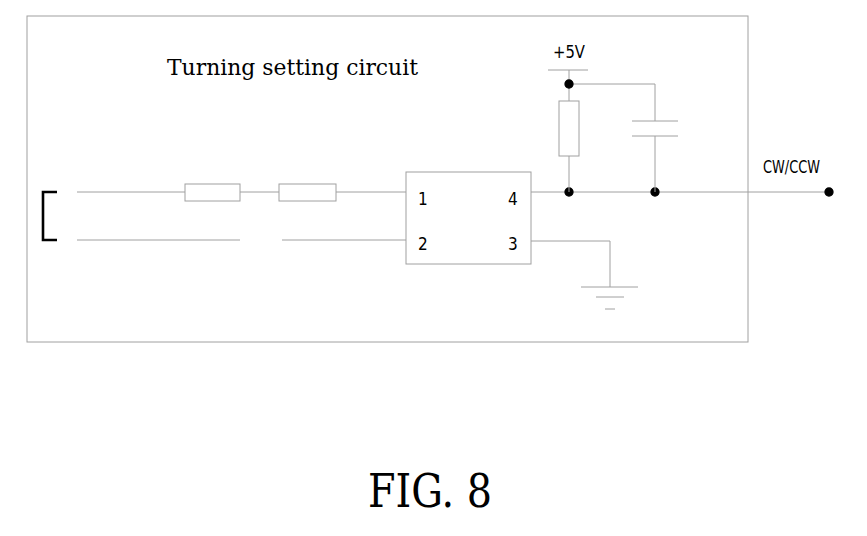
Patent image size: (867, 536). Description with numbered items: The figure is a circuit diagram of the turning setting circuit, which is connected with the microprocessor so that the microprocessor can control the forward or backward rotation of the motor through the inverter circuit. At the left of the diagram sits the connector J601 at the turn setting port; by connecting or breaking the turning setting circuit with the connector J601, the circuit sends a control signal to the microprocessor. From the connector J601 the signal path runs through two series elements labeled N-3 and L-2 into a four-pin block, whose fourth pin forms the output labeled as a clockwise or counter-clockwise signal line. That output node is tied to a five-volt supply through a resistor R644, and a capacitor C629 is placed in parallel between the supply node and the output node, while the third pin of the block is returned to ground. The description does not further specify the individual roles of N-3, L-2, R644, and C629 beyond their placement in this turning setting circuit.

The connector J601 is at (51, 200).
The resistor N-3 is at (212, 209).
The inductor L-2 is at (307, 209).
The resistor R644 is at (589, 146).
The capacitor C629 is at (675, 138).